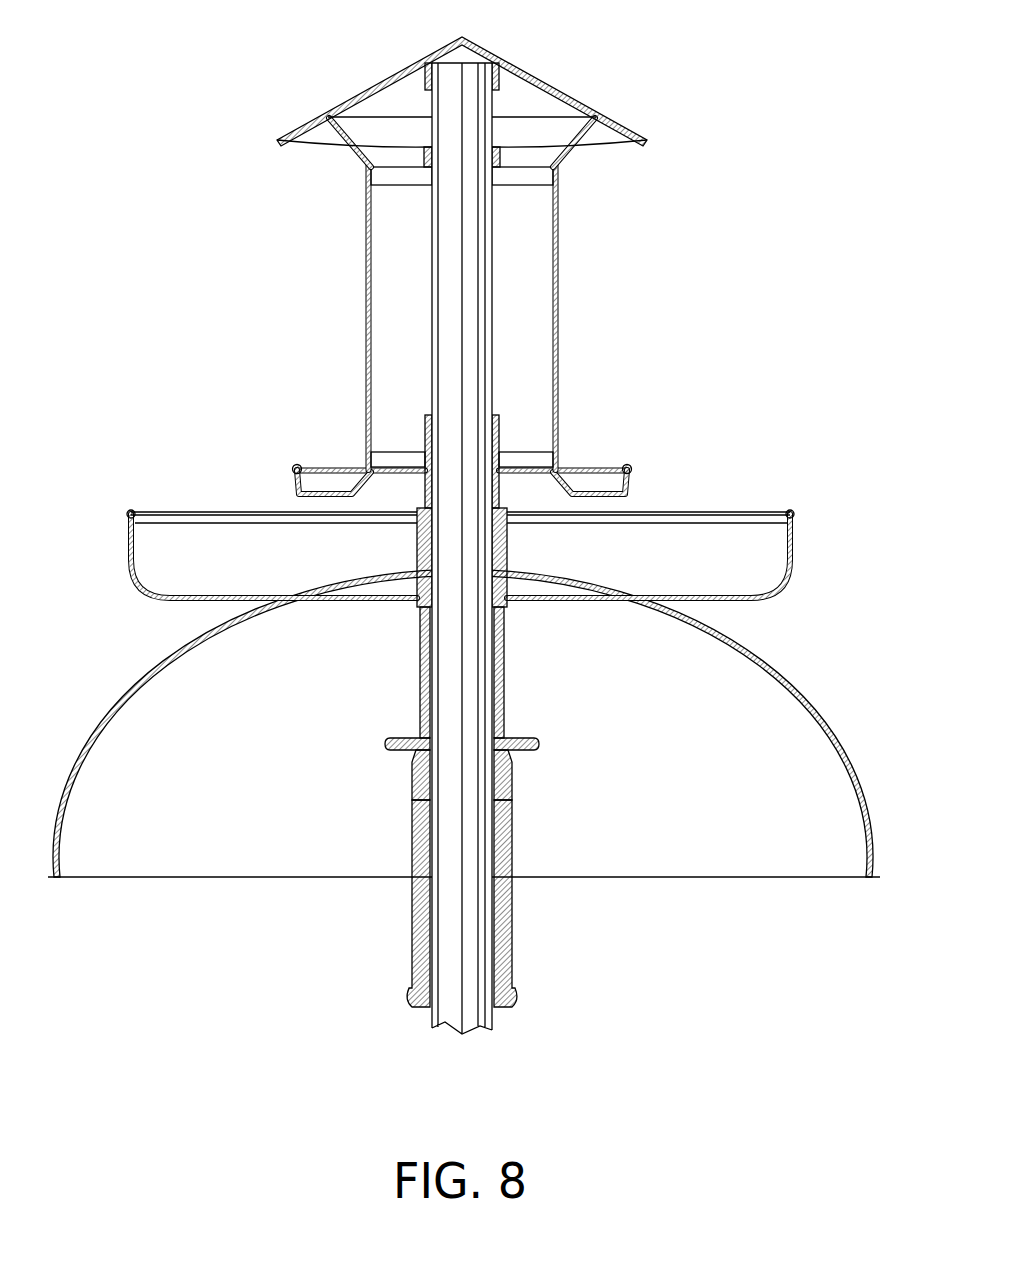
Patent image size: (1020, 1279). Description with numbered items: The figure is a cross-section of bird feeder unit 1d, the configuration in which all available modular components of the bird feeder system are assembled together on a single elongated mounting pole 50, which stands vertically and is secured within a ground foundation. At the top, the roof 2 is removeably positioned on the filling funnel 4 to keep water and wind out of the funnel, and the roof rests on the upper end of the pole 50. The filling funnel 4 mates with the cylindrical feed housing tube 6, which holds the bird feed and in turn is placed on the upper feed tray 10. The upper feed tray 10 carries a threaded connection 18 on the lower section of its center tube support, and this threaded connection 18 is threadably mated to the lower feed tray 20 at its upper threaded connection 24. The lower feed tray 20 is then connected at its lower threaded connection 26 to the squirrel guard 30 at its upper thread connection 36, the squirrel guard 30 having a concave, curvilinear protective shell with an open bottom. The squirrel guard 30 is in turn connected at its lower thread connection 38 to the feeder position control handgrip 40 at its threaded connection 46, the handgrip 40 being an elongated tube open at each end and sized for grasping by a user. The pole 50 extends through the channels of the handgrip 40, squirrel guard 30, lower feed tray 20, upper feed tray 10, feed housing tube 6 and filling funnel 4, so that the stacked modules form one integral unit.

The bird feeder unit configuration 1d is at (632, 97).
The roof 2 is at (543, 76).
The filling funnel 4 is at (567, 158).
The feed housing tube 6 is at (556, 292).
The upper feed tray 10 is at (630, 464).
The threaded connection 18 is at (418, 533).
The lower feed tray 20 is at (794, 512).
The upper threaded connection 24 is at (505, 533).
The lower threaded connection 26 is at (418, 636).
The squirrel guard 30 is at (783, 716).
The upper thread connection 36 is at (499, 630).
The lower thread connection 38 is at (506, 760).
The feeder position control handgrip 40 is at (500, 931).
The threaded connection 46 is at (414, 762).
The mounting pole 50 is at (452, 937).